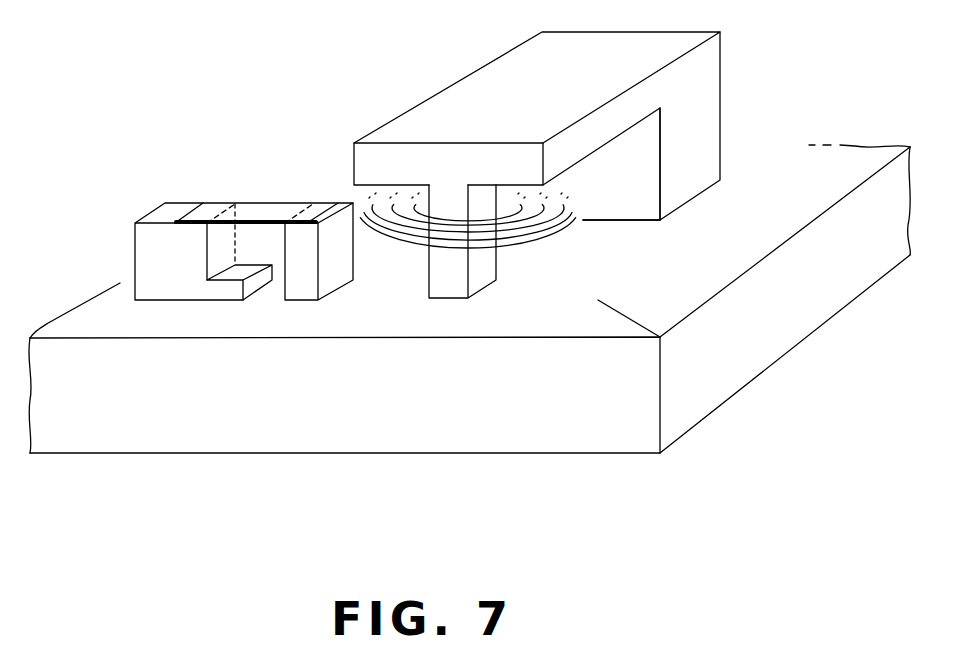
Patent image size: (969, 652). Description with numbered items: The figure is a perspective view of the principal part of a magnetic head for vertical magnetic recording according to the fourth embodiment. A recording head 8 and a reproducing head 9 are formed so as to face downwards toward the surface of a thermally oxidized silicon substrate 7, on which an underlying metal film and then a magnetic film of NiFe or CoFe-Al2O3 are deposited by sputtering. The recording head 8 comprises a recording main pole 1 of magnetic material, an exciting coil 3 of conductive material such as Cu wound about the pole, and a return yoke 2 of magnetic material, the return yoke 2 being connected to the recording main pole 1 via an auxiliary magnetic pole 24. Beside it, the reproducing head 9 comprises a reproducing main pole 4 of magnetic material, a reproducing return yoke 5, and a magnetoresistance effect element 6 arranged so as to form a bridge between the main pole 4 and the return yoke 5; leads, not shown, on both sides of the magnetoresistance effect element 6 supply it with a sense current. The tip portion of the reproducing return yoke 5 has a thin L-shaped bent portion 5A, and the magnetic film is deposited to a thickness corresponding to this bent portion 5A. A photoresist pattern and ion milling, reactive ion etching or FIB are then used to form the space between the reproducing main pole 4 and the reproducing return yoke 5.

The recording main pole 1 is at (482, 275).
The return yoke 2 is at (630, 187).
The exciting coil 3 is at (535, 238).
The reproducing main pole 4 is at (347, 228).
The reproducing return yoke 5 is at (167, 217).
The L-shaped bent portion 5A is at (228, 302).
The magnetoresistance effect element 6 is at (163, 128).
The thermally oxidized silicon substrate 7 is at (413, 435).
The recording head 8 is at (598, 300).
The reproducing head 9 is at (244, 186).
The auxiliary magnetic pole 24 is at (557, 114).